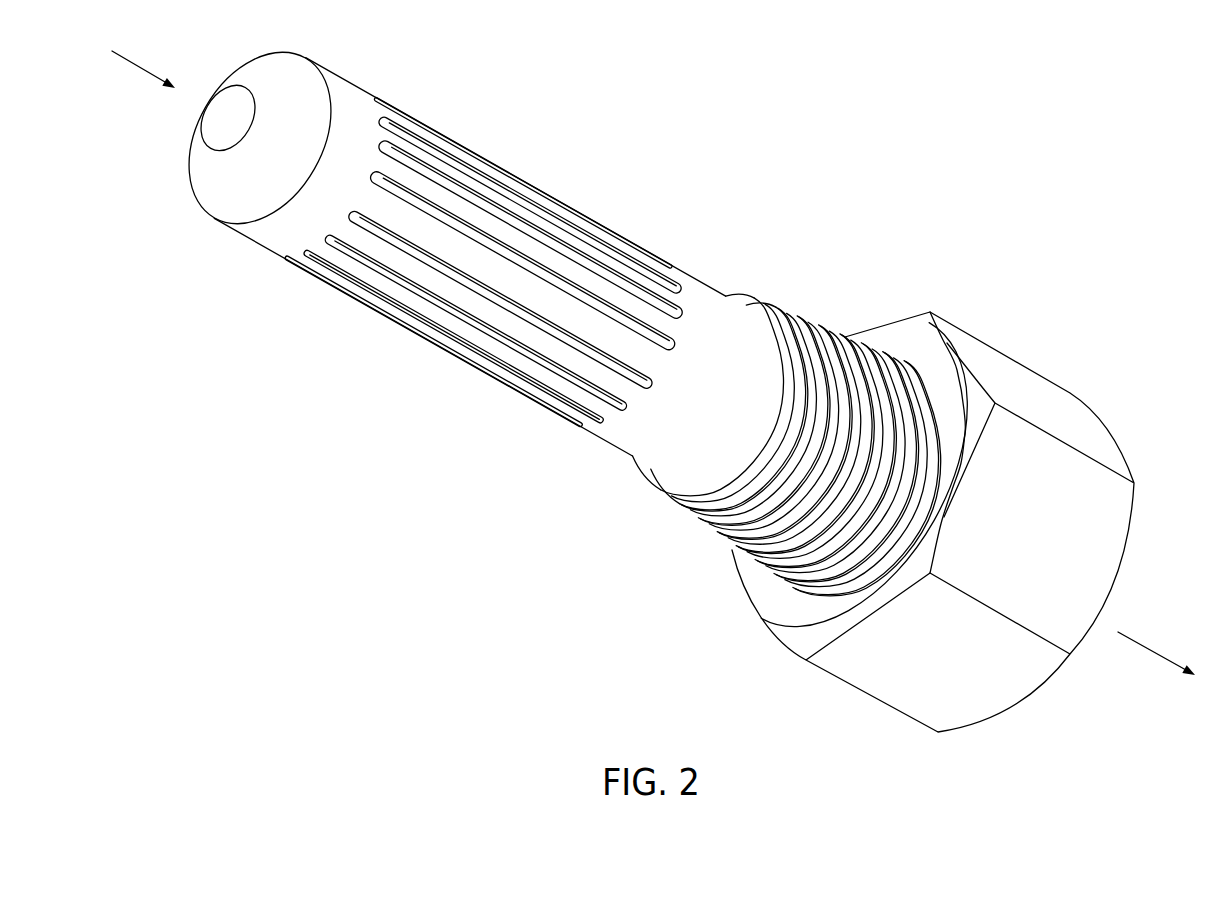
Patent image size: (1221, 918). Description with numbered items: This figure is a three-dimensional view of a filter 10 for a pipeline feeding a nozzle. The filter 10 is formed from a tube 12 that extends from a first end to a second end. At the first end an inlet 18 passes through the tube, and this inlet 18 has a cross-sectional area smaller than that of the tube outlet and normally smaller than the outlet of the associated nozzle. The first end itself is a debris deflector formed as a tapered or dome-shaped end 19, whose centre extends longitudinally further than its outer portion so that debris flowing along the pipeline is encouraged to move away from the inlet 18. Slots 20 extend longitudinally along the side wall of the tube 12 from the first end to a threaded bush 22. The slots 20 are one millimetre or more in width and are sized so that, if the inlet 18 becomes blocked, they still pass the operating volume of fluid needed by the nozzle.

The filter 10 is at (1020, 155).
The tube 12 is at (707, 286).
The inlet 18 is at (217, 132).
The tapered or dome-shaped end 19 is at (223, 202).
The slots 20 is at (503, 300).
The threaded bush 22 is at (708, 532).